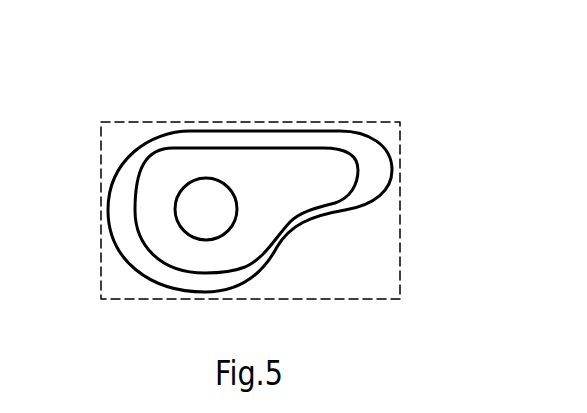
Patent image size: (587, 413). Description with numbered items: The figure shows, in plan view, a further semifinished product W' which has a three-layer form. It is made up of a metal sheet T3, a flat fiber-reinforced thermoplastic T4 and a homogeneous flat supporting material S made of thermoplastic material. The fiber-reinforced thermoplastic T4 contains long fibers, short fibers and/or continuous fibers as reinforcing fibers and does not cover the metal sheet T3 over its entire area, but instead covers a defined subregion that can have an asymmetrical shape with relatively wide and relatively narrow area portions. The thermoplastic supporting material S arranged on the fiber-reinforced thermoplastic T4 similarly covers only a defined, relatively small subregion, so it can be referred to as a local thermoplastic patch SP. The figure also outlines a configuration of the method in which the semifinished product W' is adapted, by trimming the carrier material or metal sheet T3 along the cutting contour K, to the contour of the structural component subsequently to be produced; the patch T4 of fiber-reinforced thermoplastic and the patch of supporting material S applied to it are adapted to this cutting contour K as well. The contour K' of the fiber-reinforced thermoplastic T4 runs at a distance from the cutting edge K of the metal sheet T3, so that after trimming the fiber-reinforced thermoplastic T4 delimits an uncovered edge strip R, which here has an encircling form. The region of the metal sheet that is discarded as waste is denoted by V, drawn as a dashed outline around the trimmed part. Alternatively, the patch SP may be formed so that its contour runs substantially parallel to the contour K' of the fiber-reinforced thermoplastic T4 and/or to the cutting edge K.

The cutting contour K is at (250, 173).
The contour of the fiber-reinforced thermoplastic K' is at (246, 161).
The semifinished product W' is at (267, 58).
The uncovered edge strip R is at (128, 178).
The patch SP is at (190, 213).
The supporting material S is at (200, 225).
The metal sheet T3 is at (373, 158).
The fiber-reinforced thermoplastic T4 is at (333, 185).
The waste region V is at (377, 282).